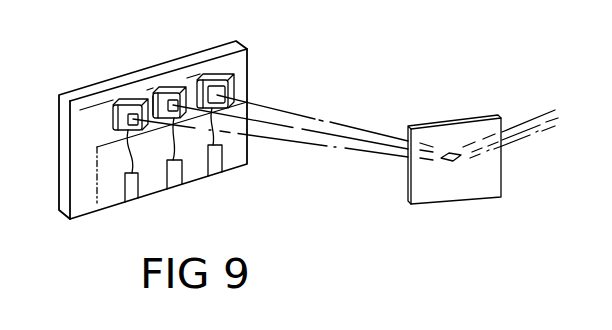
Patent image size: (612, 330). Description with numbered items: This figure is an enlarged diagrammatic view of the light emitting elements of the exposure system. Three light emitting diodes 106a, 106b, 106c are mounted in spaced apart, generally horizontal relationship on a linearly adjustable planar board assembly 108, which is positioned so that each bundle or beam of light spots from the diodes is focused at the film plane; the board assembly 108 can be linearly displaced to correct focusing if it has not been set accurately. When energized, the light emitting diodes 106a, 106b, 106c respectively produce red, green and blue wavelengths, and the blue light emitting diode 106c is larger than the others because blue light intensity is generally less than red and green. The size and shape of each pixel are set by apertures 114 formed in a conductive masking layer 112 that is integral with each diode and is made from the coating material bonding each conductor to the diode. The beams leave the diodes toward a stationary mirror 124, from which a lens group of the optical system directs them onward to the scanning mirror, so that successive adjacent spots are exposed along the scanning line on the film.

The planar board assembly 108 is at (67, 168).
The light emitting diode 106a is at (122, 104).
The light emitting diode 106b is at (190, 70).
The blue light emitting diode 106c is at (221, 71).
The conductive masking layer 112 is at (115, 110).
The apertures 114 is at (157, 92).
The stationary mirror 124 is at (478, 192).